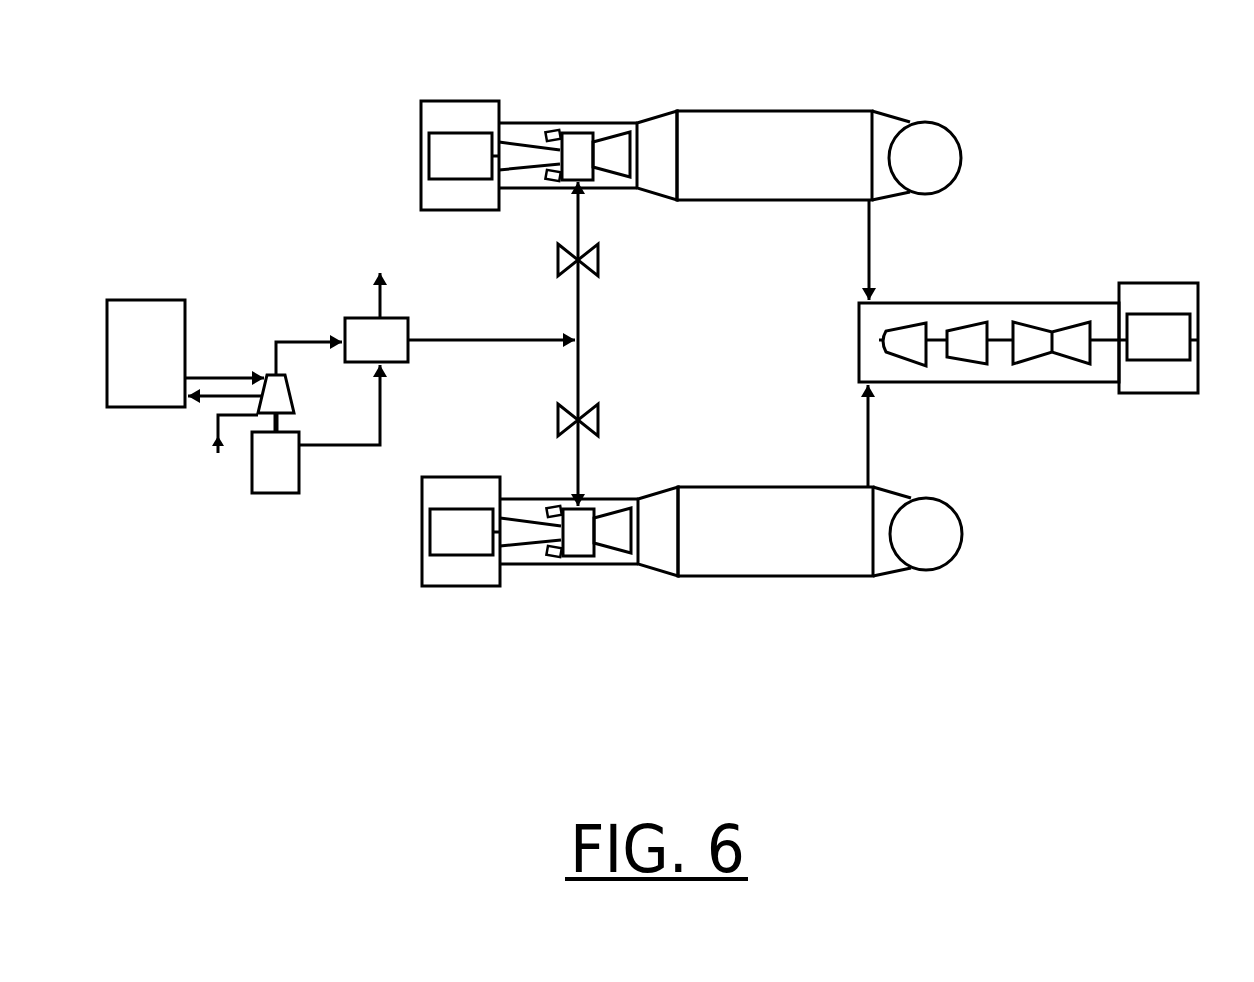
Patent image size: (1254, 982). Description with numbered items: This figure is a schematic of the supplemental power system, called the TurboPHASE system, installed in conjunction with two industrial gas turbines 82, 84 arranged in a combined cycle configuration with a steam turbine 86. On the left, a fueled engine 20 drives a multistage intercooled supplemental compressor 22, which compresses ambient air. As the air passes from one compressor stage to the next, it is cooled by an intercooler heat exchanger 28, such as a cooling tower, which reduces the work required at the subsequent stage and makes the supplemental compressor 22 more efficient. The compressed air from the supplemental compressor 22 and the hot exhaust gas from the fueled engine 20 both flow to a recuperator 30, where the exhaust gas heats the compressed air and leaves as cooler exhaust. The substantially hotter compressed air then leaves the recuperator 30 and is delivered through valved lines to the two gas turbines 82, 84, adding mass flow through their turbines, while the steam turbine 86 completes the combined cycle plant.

The fueled engine 20 is at (280, 500).
The supplemental compressor 22 is at (268, 372).
The intercooler heat exchanger 28 is at (133, 295).
The recuperator 30 is at (412, 320).
The industrial gas turbine 82 is at (745, 108).
The industrial gas turbine 84 is at (762, 585).
The steam turbine 86 is at (1028, 298).